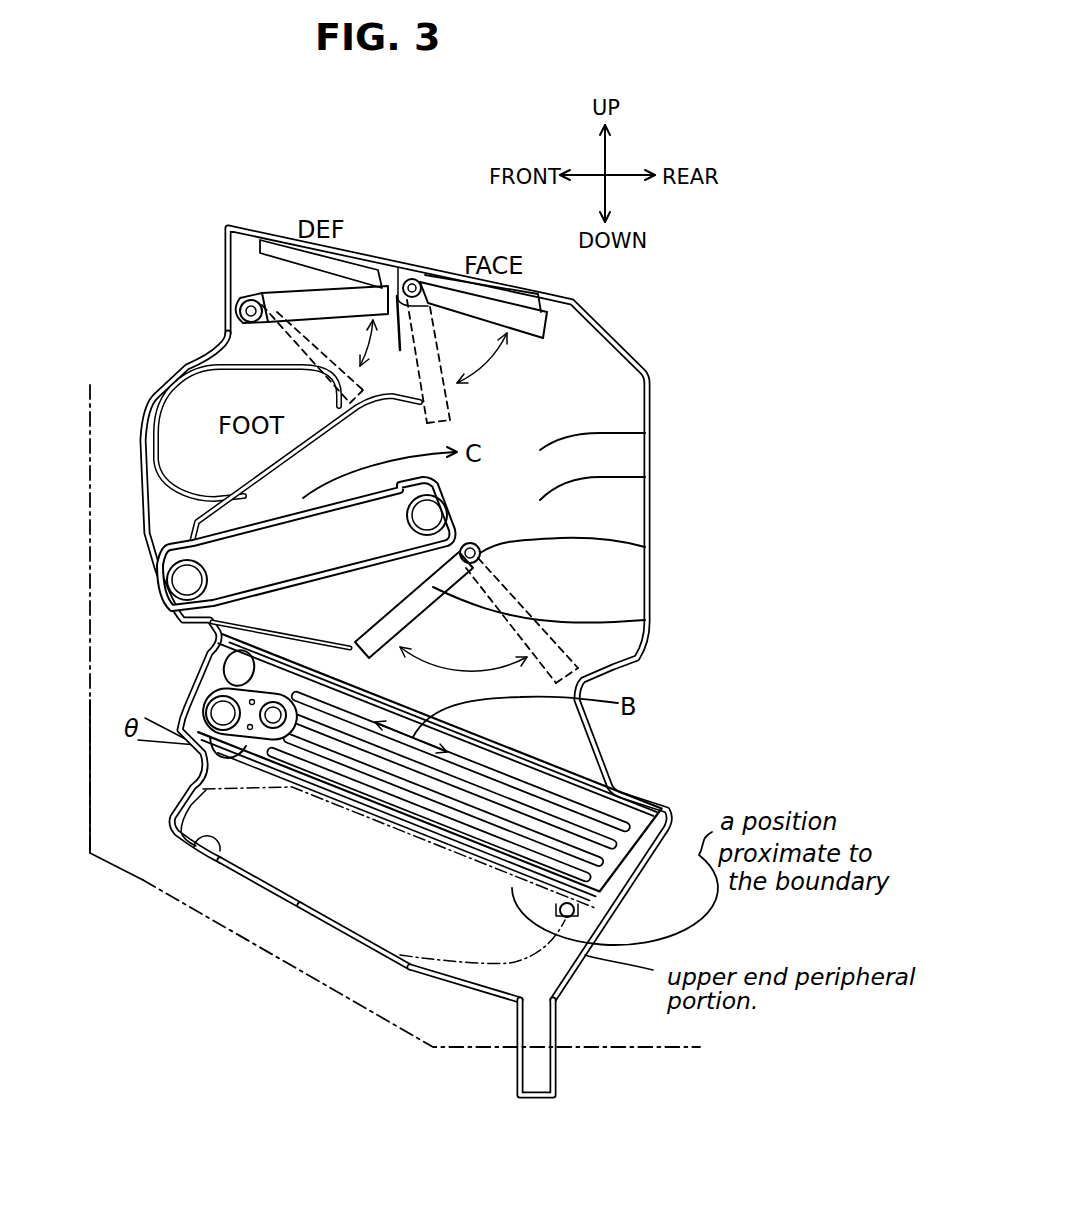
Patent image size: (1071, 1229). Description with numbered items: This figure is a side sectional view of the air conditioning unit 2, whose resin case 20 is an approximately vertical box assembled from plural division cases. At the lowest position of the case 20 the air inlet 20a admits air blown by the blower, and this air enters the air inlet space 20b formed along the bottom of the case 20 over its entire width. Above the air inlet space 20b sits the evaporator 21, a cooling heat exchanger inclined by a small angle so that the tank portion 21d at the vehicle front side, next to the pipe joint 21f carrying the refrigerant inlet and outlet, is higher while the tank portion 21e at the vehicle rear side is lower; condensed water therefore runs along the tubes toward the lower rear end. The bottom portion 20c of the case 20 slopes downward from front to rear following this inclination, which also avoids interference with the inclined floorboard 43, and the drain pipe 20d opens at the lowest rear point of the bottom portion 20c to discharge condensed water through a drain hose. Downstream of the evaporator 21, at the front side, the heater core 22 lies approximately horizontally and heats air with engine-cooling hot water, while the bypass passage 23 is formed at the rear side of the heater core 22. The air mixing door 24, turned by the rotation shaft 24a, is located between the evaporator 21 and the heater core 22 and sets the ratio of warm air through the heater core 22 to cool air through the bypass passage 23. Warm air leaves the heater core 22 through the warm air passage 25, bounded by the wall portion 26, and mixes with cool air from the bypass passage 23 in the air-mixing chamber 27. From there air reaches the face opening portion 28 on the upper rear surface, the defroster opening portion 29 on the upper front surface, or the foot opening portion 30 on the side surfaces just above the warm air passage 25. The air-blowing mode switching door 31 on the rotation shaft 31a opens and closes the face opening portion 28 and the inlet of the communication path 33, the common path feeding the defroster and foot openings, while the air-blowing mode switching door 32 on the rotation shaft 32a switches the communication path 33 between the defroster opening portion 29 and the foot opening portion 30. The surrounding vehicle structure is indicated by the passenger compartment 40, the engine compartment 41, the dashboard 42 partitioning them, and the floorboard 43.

The air conditioning unit 2 is at (653, 521).
The case 20 is at (652, 588).
The air inlet 20a is at (220, 857).
The air inlet space 20b is at (260, 843).
The bottom portion 20c is at (465, 997).
The drain pipe 20d is at (550, 1083).
The evaporator 21 is at (527, 817).
The tank portion 21d is at (200, 673).
The tank portion 21e is at (625, 872).
The pipe joint 21f is at (220, 753).
The heater core 22 is at (247, 552).
The bypass passage 23 is at (647, 477).
The air mixing door 24 is at (647, 620).
The rotation shaft 24a is at (647, 548).
The warm air passage 25 is at (315, 463).
The wall portion 26 is at (250, 503).
The air-mixing chamber 27 is at (647, 432).
The face opening portion 28 is at (523, 287).
The defroster opening portion 29 is at (275, 239).
The foot opening portion 30 is at (187, 405).
The air-blowing mode switching door 31 is at (452, 300).
The rotation shaft 31a is at (414, 280).
The air-blowing mode switching door 32 is at (360, 292).
The rotation shaft 32a is at (240, 304).
The communication path 33 is at (397, 296).
The passenger compartment 40 is at (137, 830).
The engine compartment 41 is at (72, 830).
The dashboard 42 is at (90, 395).
The floorboard 43 is at (336, 990).